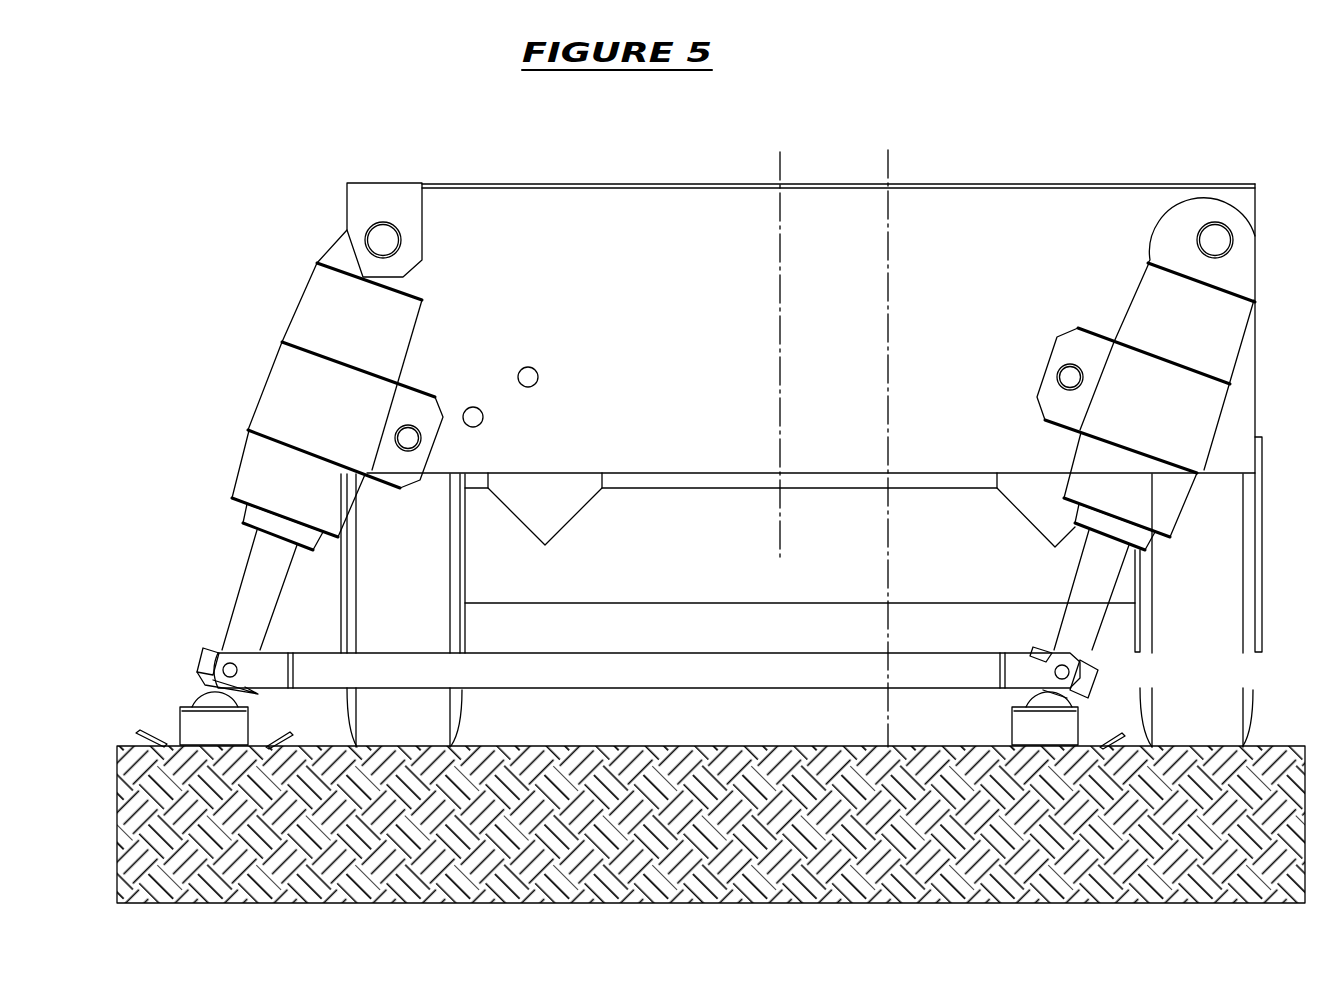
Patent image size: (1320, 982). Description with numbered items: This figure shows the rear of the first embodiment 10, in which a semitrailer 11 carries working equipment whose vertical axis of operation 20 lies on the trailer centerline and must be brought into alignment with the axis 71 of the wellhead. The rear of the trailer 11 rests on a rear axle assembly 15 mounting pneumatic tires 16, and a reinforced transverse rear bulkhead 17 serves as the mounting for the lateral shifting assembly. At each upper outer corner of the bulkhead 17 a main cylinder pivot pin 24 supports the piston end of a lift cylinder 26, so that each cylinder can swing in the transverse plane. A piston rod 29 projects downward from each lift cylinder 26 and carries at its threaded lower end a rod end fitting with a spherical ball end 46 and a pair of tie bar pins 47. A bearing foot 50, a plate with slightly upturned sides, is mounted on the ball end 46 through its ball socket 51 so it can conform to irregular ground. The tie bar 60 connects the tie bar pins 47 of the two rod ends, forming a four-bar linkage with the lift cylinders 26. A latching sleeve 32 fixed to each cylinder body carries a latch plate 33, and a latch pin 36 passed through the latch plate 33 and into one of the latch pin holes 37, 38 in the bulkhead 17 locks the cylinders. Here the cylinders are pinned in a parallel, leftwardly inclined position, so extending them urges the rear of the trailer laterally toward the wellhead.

The first embodiment 10 is at (1238, 151).
The semitrailer 11 is at (1090, 183).
The rear axle assembly 15 is at (535, 605).
The pneumatic tires 16 is at (460, 693).
The transverse rear bulkhead 17 is at (683, 225).
The vertical axis of operation 20 is at (780, 165).
The main cylinder pivot pin 24 is at (367, 223).
The lift cylinder 26 is at (243, 463).
The piston rod 29 is at (252, 552).
The latching sleeve 32 is at (258, 397).
The latch plate 33 is at (465, 411).
The latch pin 36 is at (400, 437).
The first latch pin hole 37 is at (522, 368).
The second latch pin hole 38 is at (412, 407).
The spherical ball end 46 is at (200, 687).
The tie bar pins 47 is at (215, 660).
The bearing foot 50 is at (165, 737).
The ball socket 51 is at (1013, 722).
The tie bar 60 is at (683, 688).
The axis of the wellhead 71 is at (888, 172).